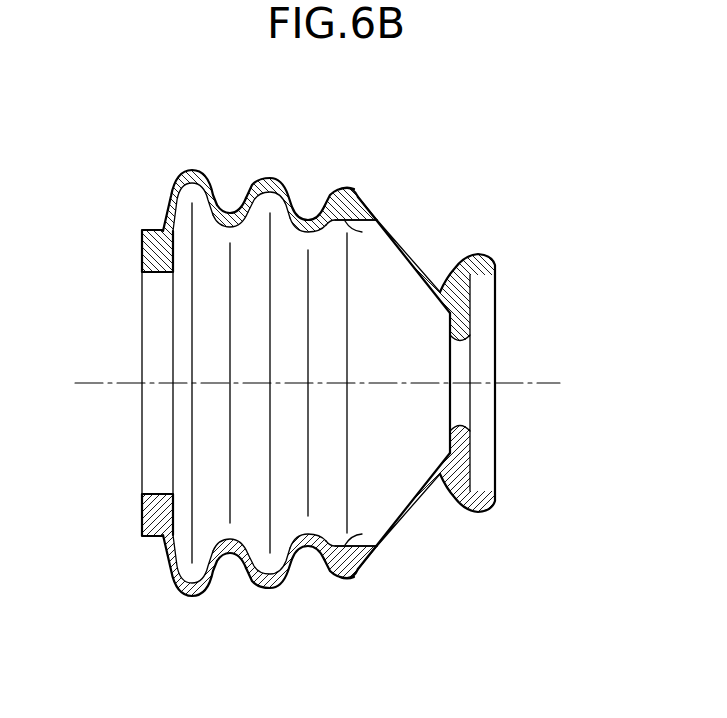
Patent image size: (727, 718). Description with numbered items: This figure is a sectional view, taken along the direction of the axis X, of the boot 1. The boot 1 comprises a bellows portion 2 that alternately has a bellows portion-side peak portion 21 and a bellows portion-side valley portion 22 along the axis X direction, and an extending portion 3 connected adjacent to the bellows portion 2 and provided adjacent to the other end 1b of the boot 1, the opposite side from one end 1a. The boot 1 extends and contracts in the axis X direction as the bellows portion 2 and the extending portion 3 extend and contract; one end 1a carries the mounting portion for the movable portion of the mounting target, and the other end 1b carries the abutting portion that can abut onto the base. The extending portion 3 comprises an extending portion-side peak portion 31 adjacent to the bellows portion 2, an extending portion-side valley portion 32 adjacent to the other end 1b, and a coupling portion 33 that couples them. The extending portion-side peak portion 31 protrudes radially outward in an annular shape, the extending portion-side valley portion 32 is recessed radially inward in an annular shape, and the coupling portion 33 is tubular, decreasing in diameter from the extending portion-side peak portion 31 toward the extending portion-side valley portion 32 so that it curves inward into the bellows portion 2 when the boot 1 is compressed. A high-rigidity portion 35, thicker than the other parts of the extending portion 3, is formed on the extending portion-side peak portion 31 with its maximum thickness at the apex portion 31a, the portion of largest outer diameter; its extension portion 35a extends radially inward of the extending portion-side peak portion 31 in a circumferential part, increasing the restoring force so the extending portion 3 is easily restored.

The boot 1 is at (506, 164).
The one end 1a is at (142, 234).
The other end 1b is at (496, 263).
The bellows portion 2 is at (255, 171).
The bellows portion-side peak portion 21 is at (193, 589).
The bellows portion-side valley portion 22 is at (232, 549).
The extending portion 3 is at (403, 214).
The extending portion-side peak portion 31 is at (345, 576).
The apex portion 31a is at (347, 186).
The extending portion-side valley portion 32 is at (451, 492).
The coupling portion 33 is at (400, 526).
The high-rigidity portion 35 is at (360, 187).
The extension portion 35a is at (396, 233).
The axis X is at (545, 386).